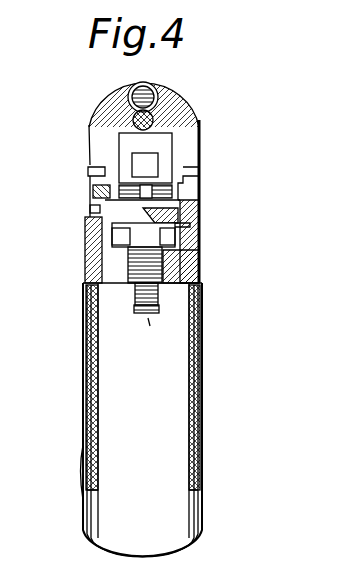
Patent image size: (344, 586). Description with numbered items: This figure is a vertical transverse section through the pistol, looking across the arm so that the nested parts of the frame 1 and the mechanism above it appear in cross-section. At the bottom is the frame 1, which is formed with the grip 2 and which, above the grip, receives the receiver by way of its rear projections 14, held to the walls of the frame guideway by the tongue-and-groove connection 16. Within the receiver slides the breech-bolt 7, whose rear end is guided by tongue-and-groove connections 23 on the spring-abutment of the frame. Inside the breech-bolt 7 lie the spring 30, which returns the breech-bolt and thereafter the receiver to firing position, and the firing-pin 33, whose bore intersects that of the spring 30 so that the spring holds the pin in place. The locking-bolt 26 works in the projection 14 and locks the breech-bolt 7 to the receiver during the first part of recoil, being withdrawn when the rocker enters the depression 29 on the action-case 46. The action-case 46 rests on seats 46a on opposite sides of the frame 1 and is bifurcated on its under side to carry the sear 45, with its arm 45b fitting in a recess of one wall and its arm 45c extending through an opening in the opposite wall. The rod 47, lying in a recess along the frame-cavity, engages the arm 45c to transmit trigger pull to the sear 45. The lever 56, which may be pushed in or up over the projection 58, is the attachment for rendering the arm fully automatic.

The frame 1 is at (142, 420).
The grip 2 is at (84, 394).
The breech-bolt 7 is at (108, 108).
The rear projections 14 is at (190, 181).
The tongue-and-groove connection 16 is at (88, 171).
The tongue-and-groove connections 23 is at (176, 195).
The locking-bolt 26 is at (162, 142).
The depression 29 is at (112, 223).
The spring 30 is at (158, 97).
The firing-pin 33 is at (160, 113).
The sear 45 is at (172, 225).
The arm of the sear 45b is at (190, 216).
The arm of the sear 45c is at (112, 216).
The action-case 46 is at (173, 240).
The seats 46a is at (180, 266).
The rod 47 is at (100, 201).
The lever 56 is at (150, 303).
The projection 58 is at (140, 337).